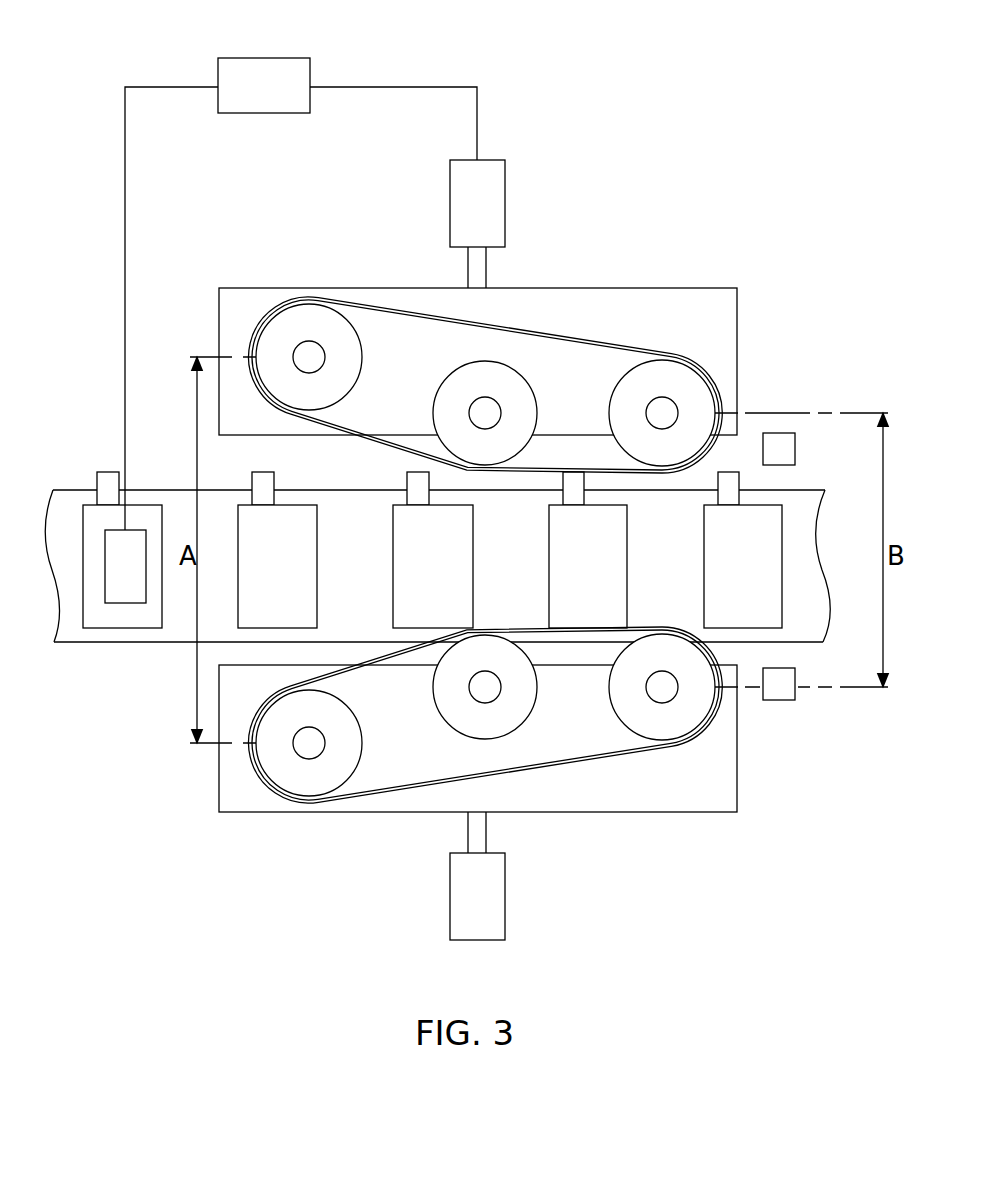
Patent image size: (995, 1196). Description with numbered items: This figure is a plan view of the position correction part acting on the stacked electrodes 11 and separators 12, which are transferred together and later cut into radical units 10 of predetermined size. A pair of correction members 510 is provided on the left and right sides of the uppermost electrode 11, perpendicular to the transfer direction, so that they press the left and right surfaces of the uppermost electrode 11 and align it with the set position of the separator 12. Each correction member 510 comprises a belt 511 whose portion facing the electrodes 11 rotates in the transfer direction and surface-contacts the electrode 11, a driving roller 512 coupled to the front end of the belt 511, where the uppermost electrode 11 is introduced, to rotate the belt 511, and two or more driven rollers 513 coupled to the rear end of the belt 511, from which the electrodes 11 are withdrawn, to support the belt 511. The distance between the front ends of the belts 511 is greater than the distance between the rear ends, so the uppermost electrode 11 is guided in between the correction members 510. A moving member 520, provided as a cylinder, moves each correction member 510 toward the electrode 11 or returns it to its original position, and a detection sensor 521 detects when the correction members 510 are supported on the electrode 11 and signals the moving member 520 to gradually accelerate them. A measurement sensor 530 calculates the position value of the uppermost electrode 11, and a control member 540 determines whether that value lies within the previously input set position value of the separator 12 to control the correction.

The radical unit 10 is at (425, 506).
The electrode 11 is at (110, 515).
The separator 12 is at (73, 497).
The correction member 510 is at (417, 193).
The belt 511 is at (280, 302).
The driving roller 512 is at (328, 322).
The driven roller 513 is at (643, 380).
The moving member 520 is at (505, 205).
The detection sensor 521 is at (795, 448).
The measurement sensor 530 is at (135, 533).
The control member 540 is at (262, 58).